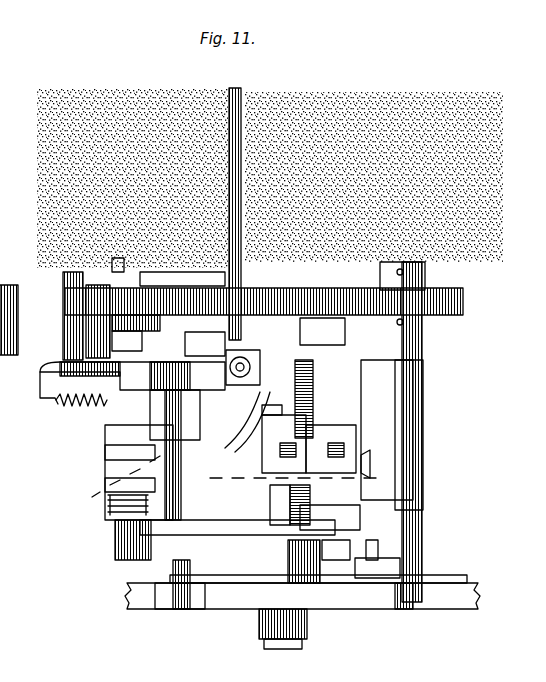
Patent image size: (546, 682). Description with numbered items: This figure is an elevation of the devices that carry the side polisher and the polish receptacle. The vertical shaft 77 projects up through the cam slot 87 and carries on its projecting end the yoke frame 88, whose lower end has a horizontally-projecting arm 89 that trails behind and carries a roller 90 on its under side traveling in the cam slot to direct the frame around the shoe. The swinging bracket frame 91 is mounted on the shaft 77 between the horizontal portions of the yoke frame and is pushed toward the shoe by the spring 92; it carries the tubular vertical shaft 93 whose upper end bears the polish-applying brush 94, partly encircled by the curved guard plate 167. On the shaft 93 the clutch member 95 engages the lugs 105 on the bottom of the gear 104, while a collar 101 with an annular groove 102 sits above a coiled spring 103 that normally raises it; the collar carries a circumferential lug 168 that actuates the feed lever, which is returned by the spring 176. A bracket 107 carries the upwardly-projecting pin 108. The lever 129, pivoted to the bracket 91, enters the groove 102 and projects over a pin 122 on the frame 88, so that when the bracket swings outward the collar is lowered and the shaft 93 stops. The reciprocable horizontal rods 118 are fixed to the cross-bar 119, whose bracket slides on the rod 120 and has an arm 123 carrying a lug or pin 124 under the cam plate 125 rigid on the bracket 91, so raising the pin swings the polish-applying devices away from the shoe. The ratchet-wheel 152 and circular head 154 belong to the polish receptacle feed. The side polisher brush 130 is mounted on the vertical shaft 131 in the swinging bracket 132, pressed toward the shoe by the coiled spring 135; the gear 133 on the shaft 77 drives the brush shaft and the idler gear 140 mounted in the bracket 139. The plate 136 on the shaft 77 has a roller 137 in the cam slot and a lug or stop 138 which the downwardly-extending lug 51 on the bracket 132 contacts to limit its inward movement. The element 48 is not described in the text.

The polish-applying brush 94 is at (44, 164).
The side polisher brush 130 is at (402, 100).
The curved guard plate 167 is at (237, 90).
The circular head 154 is at (464, 302).
The gear 104 is at (70, 294).
The upwardly-projecting pin 108 is at (95, 322).
The bracket 107 is at (72, 366).
The lugs 105 is at (143, 360).
The bracket 139 is at (210, 318).
The idler gear 140 is at (215, 292).
The clutch member 95 is at (165, 375).
The vertical shaft 93 is at (115, 438).
The spring 176 is at (68, 414).
The swinging bracket frame 91 is at (178, 495).
The collar 101 is at (104, 452).
The annular groove 102 is at (104, 470).
The coiled spring 103 is at (106, 503).
The circumferential lug 168 is at (62, 495).
The lever 129 is at (135, 520).
The lug or pin 124 is at (252, 368).
The arm 123 is at (296, 395).
The cam plate 125 is at (240, 440).
The ratchet-wheel 152 is at (266, 452).
The reciprocable horizontal rods 118 is at (345, 452).
The cross-bar 119 is at (260, 478).
The pin 122 is at (275, 492).
The rod 120 is at (235, 528).
The coiled spring 135 is at (345, 510).
The spring 92 is at (312, 420).
The yoke frame 88 is at (318, 330).
The gear 133 is at (335, 293).
The swinging bracket 132 is at (424, 372).
The vertical shaft 131 is at (415, 412).
The downwardly-extending lug 51 is at (366, 550).
The lug or stop 138 is at (400, 572).
The plate 136 is at (455, 582).
The base plate 48 is at (124, 595).
The horizontally-projecting arm 89 is at (235, 560).
The roller 90 is at (162, 598).
The cam slot 87 is at (210, 600).
The roller 137 is at (408, 605).
The vertical shaft 77 is at (280, 648).